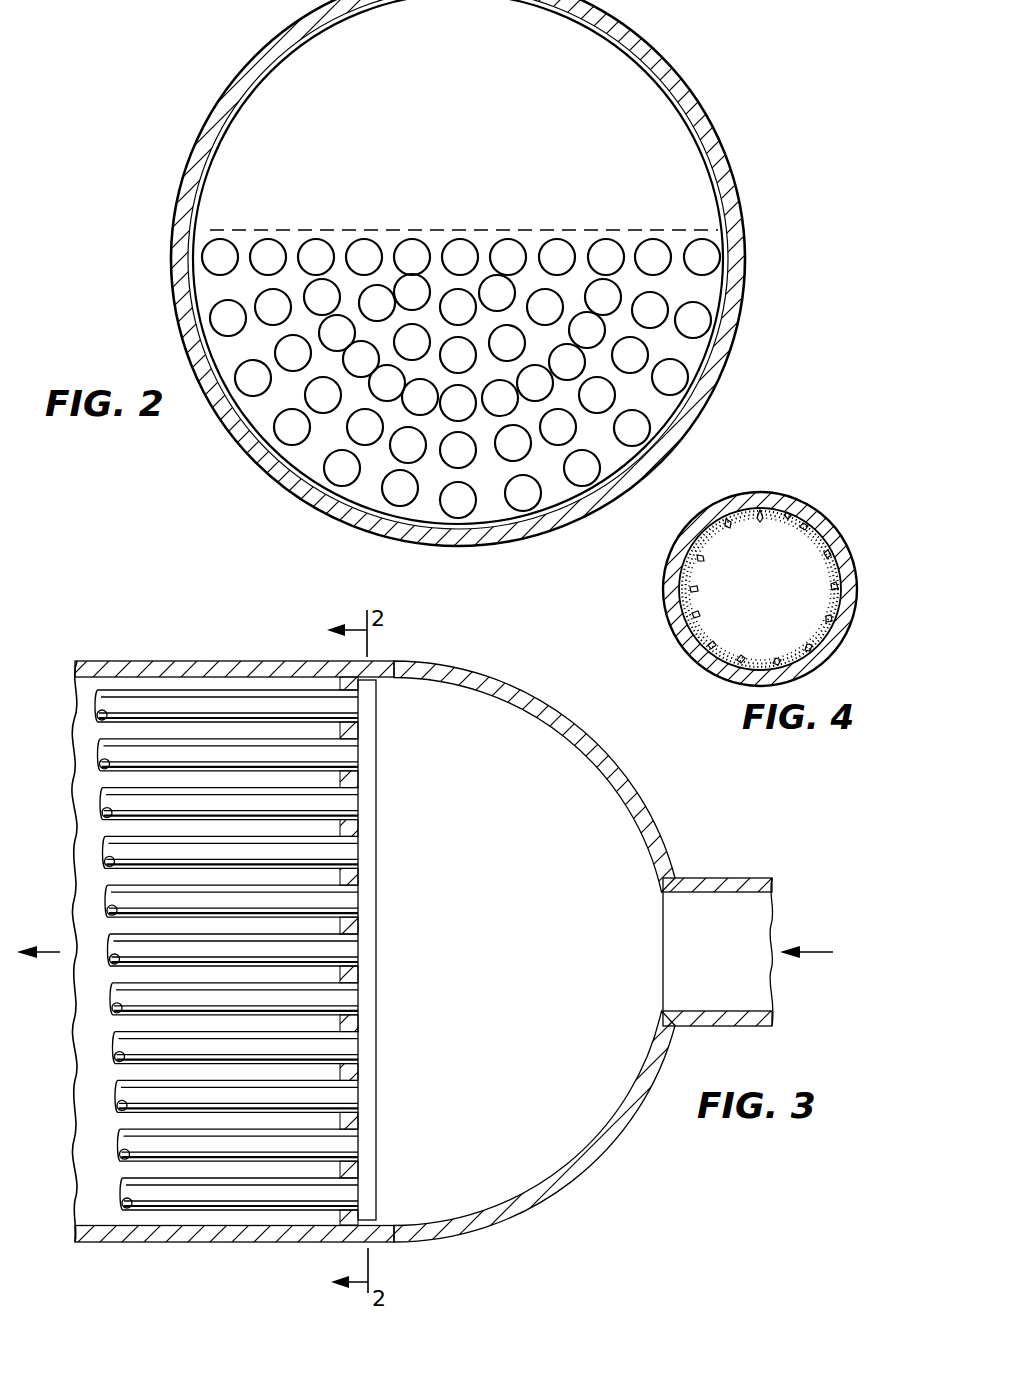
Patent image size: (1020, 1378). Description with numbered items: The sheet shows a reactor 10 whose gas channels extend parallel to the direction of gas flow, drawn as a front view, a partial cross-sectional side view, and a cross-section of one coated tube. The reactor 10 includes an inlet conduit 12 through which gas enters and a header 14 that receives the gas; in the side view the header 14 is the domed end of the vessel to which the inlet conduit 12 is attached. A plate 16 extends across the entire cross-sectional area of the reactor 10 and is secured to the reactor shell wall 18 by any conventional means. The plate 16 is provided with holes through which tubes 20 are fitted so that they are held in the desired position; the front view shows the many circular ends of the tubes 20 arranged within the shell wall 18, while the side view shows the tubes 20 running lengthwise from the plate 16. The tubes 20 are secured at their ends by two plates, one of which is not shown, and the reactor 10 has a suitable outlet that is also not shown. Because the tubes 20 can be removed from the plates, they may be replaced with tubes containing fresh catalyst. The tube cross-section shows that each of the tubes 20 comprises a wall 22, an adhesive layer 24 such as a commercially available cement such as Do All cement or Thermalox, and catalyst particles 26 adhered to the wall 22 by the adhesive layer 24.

In FIG. 2, the reactor 10 is at (503, 273).
In FIG. 3, the reactor 10 is at (425, 910).
In FIG. 3, the inlet conduit 12 is at (728, 878).
In FIG. 3, the header 14 is at (528, 702).
In FIG. 2, the plate 16 is at (683, 84).
In FIG. 3, the plate 16 is at (350, 779).
In FIG. 2, the reactor shell wall 18 is at (745, 219).
In FIG. 3, the reactor shell wall 18 is at (190, 662).
In FIG. 2, the tubes 20 is at (505, 338).
In FIG. 3, the tubes 20 is at (350, 936).
In FIG. 4, the tubes 20 is at (779, 560).
In FIG. 4, the wall 22 is at (834, 539).
In FIG. 4, the adhesive layer 24 is at (762, 512).
In FIG. 4, the catalyst particles 26 is at (698, 606).